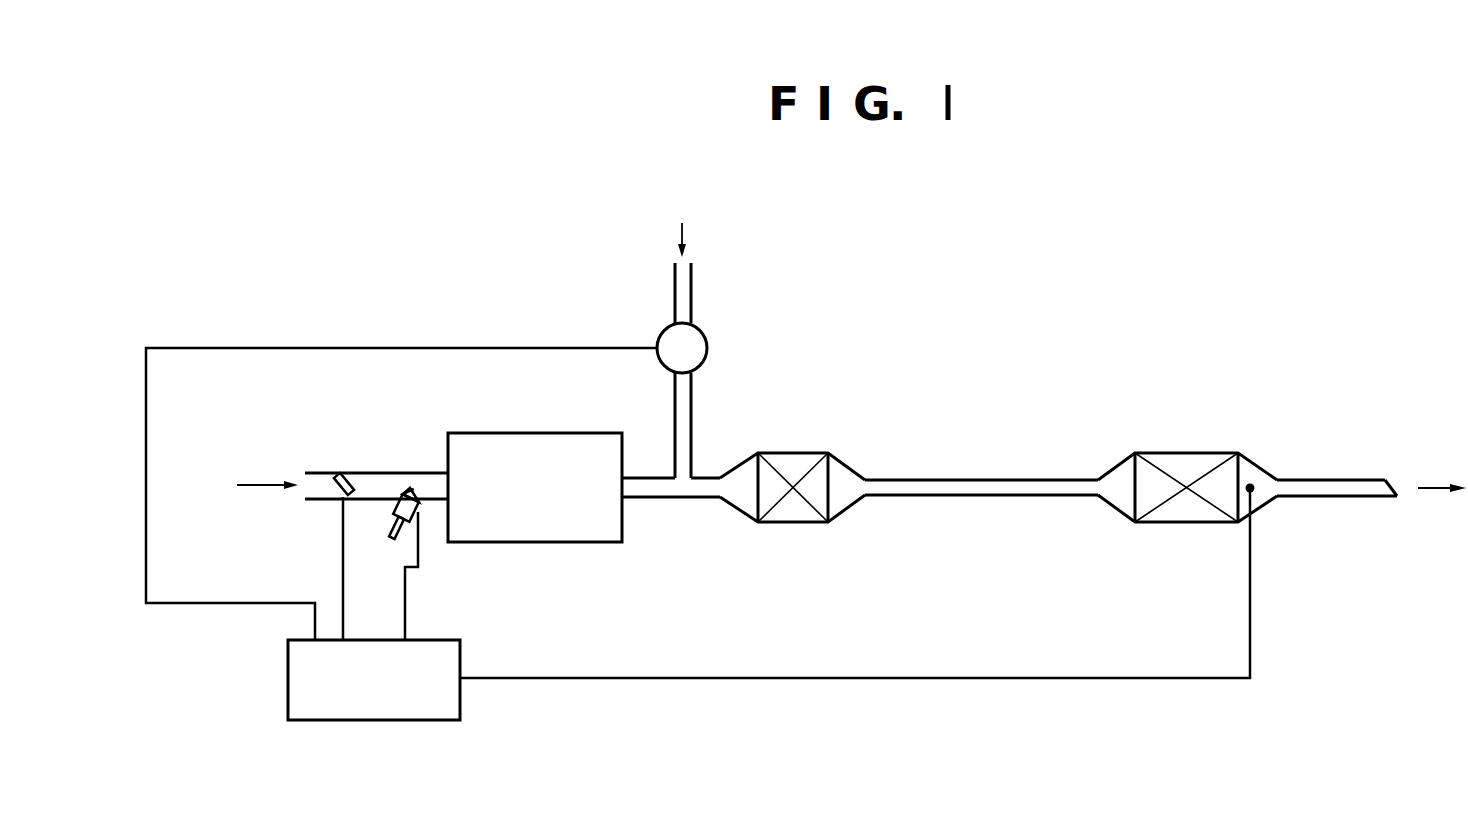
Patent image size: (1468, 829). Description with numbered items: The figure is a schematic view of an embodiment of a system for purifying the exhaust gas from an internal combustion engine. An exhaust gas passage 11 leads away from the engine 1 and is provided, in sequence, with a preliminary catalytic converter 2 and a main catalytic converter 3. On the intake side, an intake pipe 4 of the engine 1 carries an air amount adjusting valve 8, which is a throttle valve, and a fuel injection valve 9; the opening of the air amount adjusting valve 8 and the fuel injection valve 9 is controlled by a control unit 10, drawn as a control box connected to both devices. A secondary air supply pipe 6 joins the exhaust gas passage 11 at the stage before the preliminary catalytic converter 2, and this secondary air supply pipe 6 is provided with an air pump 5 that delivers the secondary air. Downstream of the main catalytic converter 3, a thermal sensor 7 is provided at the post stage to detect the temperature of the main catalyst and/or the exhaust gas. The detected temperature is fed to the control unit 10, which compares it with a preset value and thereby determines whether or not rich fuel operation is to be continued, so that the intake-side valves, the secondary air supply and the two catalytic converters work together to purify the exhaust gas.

The engine 1 is at (565, 432).
The preliminary catalytic converter 2 is at (812, 453).
The main catalytic converter 3 is at (1198, 453).
The intake pipe 4 is at (320, 473).
The air pump 5 is at (697, 345).
The secondary air supply pipe 6 is at (693, 406).
The thermal sensor 7 is at (1253, 487).
The air amount adjusting valve 8 is at (345, 473).
The fuel injection valve 9 is at (400, 488).
The control unit 10 is at (416, 722).
The exhaust gas passage 11 is at (940, 480).